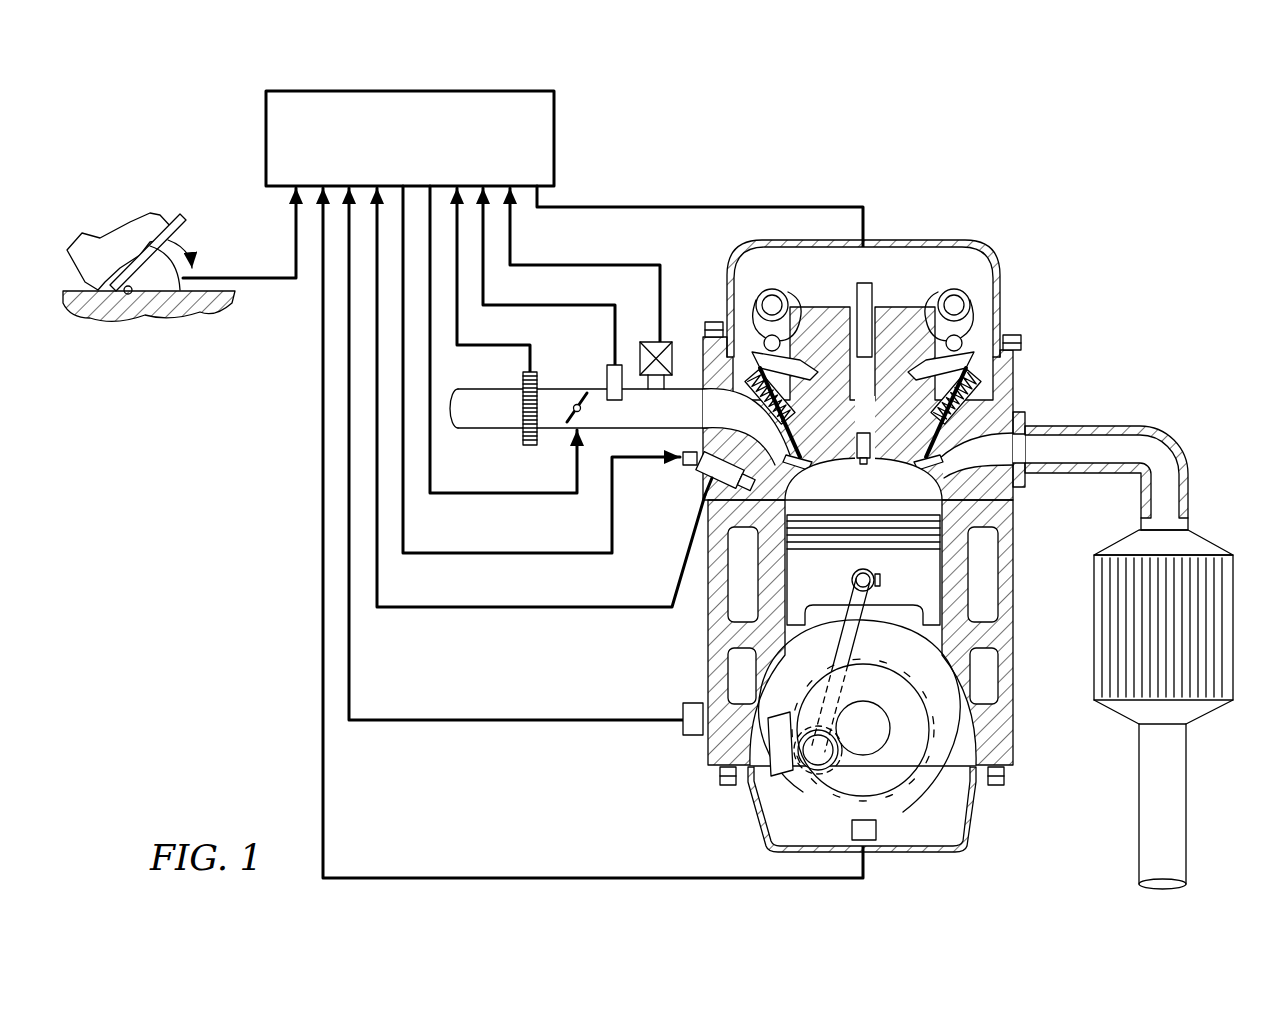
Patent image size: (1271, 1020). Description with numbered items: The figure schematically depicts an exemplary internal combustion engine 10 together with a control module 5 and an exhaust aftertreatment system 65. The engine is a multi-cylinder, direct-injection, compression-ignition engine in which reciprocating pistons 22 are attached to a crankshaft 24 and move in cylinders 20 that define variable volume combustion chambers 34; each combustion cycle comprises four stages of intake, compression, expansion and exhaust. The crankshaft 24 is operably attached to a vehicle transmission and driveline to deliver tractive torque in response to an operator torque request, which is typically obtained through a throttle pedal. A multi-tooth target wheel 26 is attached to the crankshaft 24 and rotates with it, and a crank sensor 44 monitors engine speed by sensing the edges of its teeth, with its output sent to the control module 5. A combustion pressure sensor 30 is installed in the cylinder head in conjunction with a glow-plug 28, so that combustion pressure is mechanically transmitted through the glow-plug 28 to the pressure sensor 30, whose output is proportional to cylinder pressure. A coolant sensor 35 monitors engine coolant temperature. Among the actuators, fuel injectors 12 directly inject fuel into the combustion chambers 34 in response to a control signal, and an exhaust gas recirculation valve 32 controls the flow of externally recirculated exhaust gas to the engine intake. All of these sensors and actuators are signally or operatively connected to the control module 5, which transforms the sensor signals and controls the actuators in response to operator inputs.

The control module 5 is at (532, 102).
The internal combustion engine 10 is at (985, 262).
The fuel injector 12 is at (868, 300).
The cylinder 20 is at (1008, 494).
The piston 22 is at (830, 591).
The crankshaft 24 is at (942, 733).
The multi-tooth target wheel 26 is at (907, 748).
The glow-plug 28 is at (635, 460).
The combustion pressure sensor 30 is at (640, 610).
The exhaust gas recirculation valve 32 is at (663, 338).
The combustion chamber 34 is at (875, 506).
The coolant sensor 35 is at (640, 728).
The crank sensor 44 is at (875, 828).
The exhaust aftertreatment system 65 is at (1205, 548).